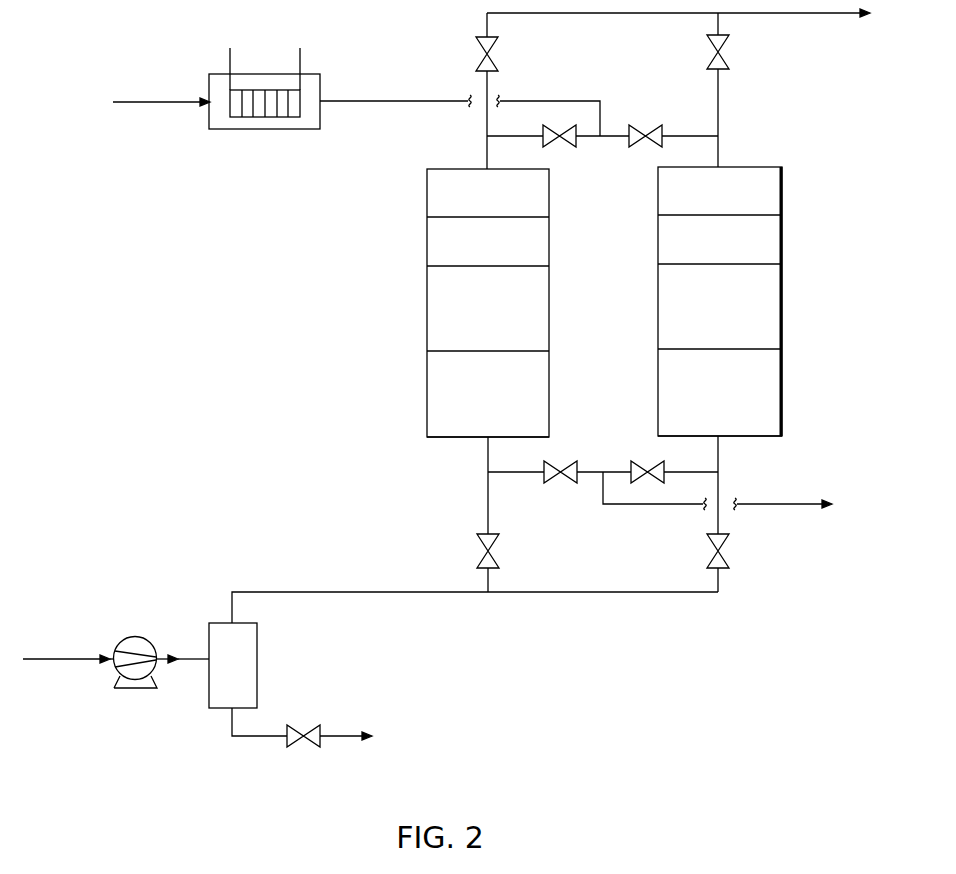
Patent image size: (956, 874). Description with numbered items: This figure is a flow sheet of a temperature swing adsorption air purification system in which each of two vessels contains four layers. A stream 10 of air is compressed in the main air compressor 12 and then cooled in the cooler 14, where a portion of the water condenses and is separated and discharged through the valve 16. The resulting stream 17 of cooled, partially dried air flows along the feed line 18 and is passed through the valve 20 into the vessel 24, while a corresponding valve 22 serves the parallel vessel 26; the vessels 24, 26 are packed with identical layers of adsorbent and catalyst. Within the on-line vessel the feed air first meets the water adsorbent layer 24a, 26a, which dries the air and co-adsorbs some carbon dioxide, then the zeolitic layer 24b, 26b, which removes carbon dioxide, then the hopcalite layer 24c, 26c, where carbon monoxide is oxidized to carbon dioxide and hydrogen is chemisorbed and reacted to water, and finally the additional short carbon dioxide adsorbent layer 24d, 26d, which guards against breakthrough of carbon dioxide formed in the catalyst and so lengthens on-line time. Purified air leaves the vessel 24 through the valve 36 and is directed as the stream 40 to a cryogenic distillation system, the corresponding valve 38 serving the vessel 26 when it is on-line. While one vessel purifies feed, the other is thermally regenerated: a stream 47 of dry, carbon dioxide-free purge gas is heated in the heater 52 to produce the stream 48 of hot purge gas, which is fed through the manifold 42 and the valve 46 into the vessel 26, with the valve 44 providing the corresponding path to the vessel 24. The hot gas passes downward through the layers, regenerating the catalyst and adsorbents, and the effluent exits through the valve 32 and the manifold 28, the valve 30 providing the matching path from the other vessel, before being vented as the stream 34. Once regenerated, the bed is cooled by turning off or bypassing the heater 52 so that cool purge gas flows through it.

The stream of air 10 is at (66, 650).
The main air compressor 12 is at (144, 646).
The cooler 14 is at (217, 665).
The valve 16 is at (302, 723).
The stream of cooled, partially dried air 17 is at (360, 599).
The feed line 18 is at (603, 584).
The valve 20 is at (475, 551).
The inlet valve 22 is at (729, 551).
The vessel 24 is at (501, 303).
The first layer of water adsorbent 24a is at (488, 417).
The second layer 24b is at (488, 320).
The layer of hopcalite 24c is at (488, 250).
The additional adsorbent layer 24d is at (488, 206).
The vessel 26 is at (732, 301).
The first layer of water adsorbent 26a is at (720, 415).
The second layer 26b is at (720, 318).
The layer of hopcalite 26c is at (720, 249).
The additional adsorbent layer 26d is at (720, 203).
The manifold 28 is at (604, 461).
The bottom cross valve 30 is at (560, 481).
The valve 32 is at (647, 478).
The stream 34 is at (717, 499).
The valve 36 is at (474, 54).
The product outlet valve 38 is at (725, 52).
The stream 40 is at (678, 27).
The manifold 42 is at (554, 125).
The top cross valve 44 is at (559, 145).
The valve 46 is at (645, 144).
The stream of dry, carbon dioxide-free purge gas 47 is at (161, 118).
The stream of hot purge gas 48 is at (395, 111).
The heater 52 is at (264, 105).